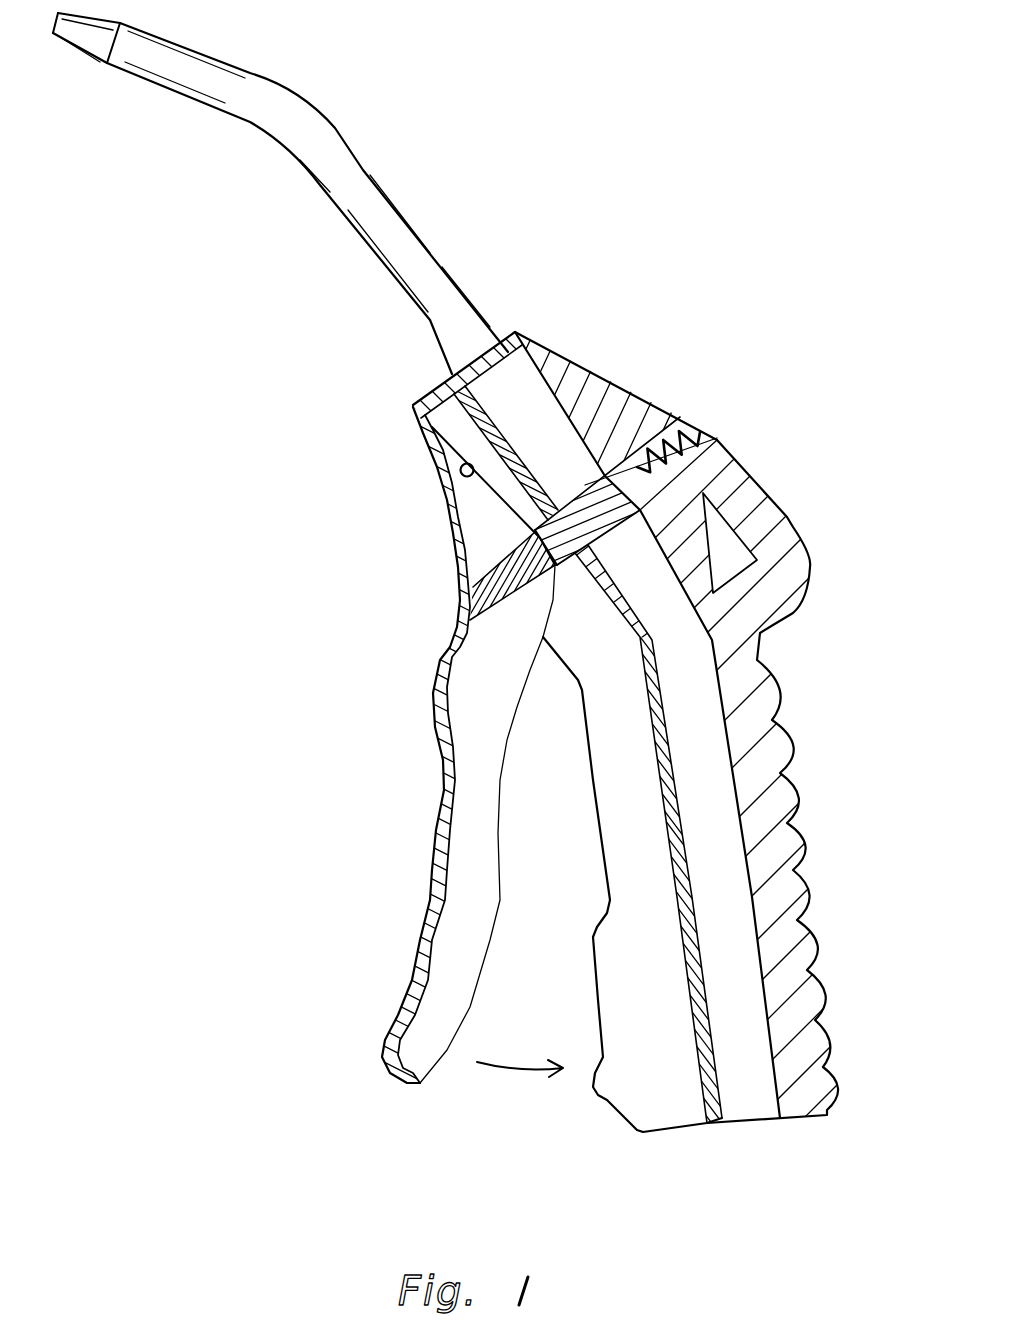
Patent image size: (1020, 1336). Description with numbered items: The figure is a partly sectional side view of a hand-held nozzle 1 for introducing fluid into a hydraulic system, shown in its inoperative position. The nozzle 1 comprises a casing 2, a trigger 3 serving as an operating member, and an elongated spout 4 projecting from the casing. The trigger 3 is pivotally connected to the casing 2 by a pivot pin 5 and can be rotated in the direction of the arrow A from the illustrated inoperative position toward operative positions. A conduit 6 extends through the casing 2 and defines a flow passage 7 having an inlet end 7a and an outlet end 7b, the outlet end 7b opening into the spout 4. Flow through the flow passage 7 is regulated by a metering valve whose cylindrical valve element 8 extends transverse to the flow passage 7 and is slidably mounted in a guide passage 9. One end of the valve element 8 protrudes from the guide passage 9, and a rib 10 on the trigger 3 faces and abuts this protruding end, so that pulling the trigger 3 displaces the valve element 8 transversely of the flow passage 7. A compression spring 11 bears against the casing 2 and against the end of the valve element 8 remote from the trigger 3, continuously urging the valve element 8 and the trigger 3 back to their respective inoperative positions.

The nozzle 1 is at (691, 177).
The casing 2 is at (797, 509).
The trigger 3 is at (424, 818).
The spout 4 is at (387, 187).
The pivot pin 5 is at (465, 482).
The conduit 6 is at (688, 958).
The flow passage 7 is at (694, 822).
The inlet end 7a is at (750, 1123).
The outlet end 7b is at (476, 372).
The valve element 8 is at (578, 483).
The guide passage 9 is at (688, 427).
The rib 10 is at (512, 612).
The compression spring 11 is at (717, 440).